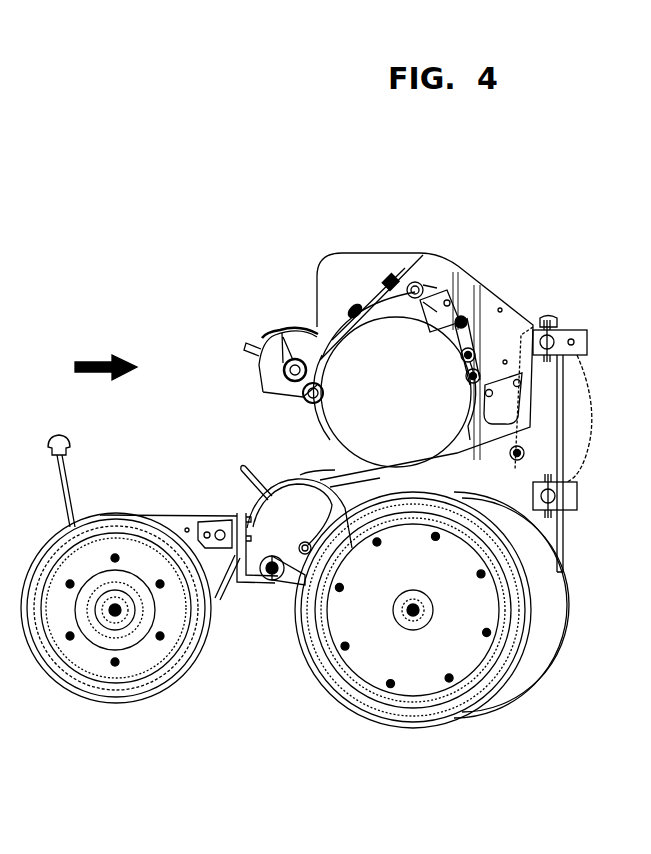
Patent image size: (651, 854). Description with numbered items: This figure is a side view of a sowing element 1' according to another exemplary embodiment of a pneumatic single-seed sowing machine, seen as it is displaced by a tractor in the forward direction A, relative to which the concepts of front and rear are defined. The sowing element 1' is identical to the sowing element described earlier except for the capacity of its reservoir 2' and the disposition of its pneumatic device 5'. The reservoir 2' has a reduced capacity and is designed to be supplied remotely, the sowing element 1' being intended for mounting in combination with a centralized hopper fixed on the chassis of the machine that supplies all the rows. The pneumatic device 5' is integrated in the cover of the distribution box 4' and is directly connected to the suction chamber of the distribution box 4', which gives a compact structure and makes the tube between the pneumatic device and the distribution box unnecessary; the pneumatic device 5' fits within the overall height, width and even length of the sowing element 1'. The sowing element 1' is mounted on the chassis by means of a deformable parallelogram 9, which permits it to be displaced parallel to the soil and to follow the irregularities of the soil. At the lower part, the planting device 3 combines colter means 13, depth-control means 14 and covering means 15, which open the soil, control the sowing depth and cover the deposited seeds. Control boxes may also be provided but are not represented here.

The sowing element 1' is at (416, 341).
The reservoir 2' is at (358, 275).
The distribution box 4' is at (345, 379).
The pneumatic device 5' is at (486, 326).
The deformable parallelogram 9 is at (578, 509).
The colter means 13 is at (558, 650).
The planting device 3 is at (506, 680).
The depth-control means 14 is at (357, 718).
The covering means 15 is at (150, 688).
The forward direction A is at (94, 366).